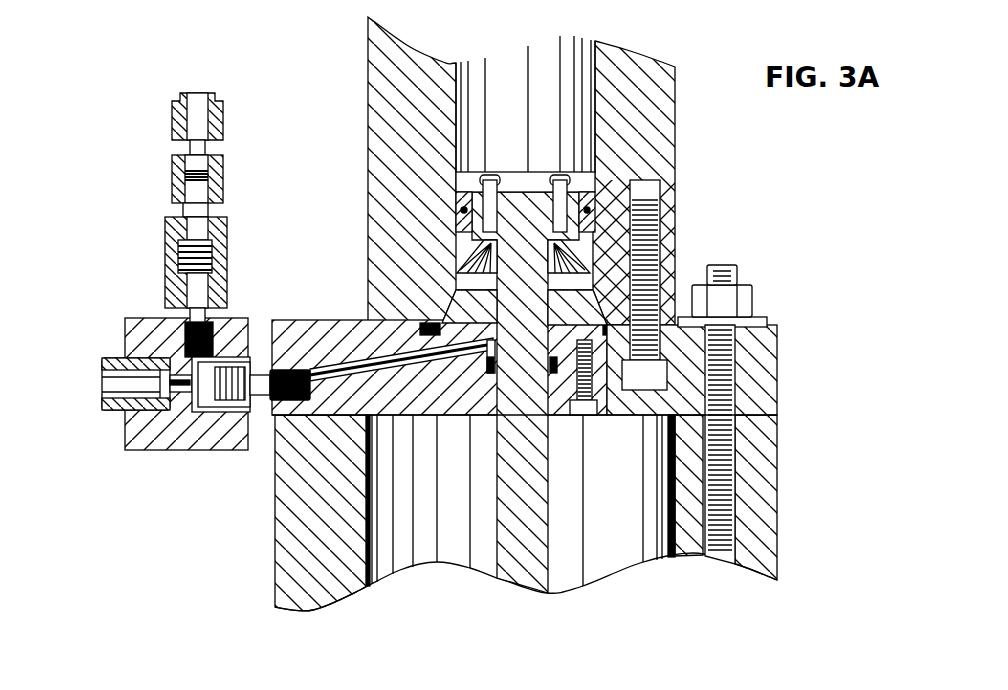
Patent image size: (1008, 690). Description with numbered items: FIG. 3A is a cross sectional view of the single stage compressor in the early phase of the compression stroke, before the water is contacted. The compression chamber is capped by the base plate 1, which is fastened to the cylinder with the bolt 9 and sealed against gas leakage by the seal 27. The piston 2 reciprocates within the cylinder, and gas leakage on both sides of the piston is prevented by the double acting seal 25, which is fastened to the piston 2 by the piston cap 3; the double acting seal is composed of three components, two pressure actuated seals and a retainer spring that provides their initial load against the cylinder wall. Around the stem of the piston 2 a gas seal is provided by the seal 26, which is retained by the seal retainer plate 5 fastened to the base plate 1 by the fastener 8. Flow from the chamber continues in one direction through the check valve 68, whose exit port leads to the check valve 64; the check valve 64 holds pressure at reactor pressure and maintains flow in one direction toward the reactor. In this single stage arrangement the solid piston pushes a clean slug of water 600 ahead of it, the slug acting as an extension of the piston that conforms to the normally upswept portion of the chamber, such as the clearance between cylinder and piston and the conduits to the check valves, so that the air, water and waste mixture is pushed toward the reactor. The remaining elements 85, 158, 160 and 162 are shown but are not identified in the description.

The base plate 1 is at (767, 352).
The piston 2 is at (607, 270).
The piston cap 3 is at (598, 173).
The seal retainer plate 5 is at (437, 415).
The fastener 8 is at (593, 417).
The bolt 9 is at (650, 383).
The double acting seal 25 is at (590, 213).
The seal 26 is at (597, 420).
The seal 27 is at (340, 415).
The check valve 64 is at (150, 247).
The check valve 68 is at (138, 318).
The cylinder bore 85 is at (519, 106).
The valve seal 158 is at (223, 350).
The spring coupling 160 is at (215, 420).
The connector 162 is at (263, 415).
The slug of water 600 is at (627, 293).